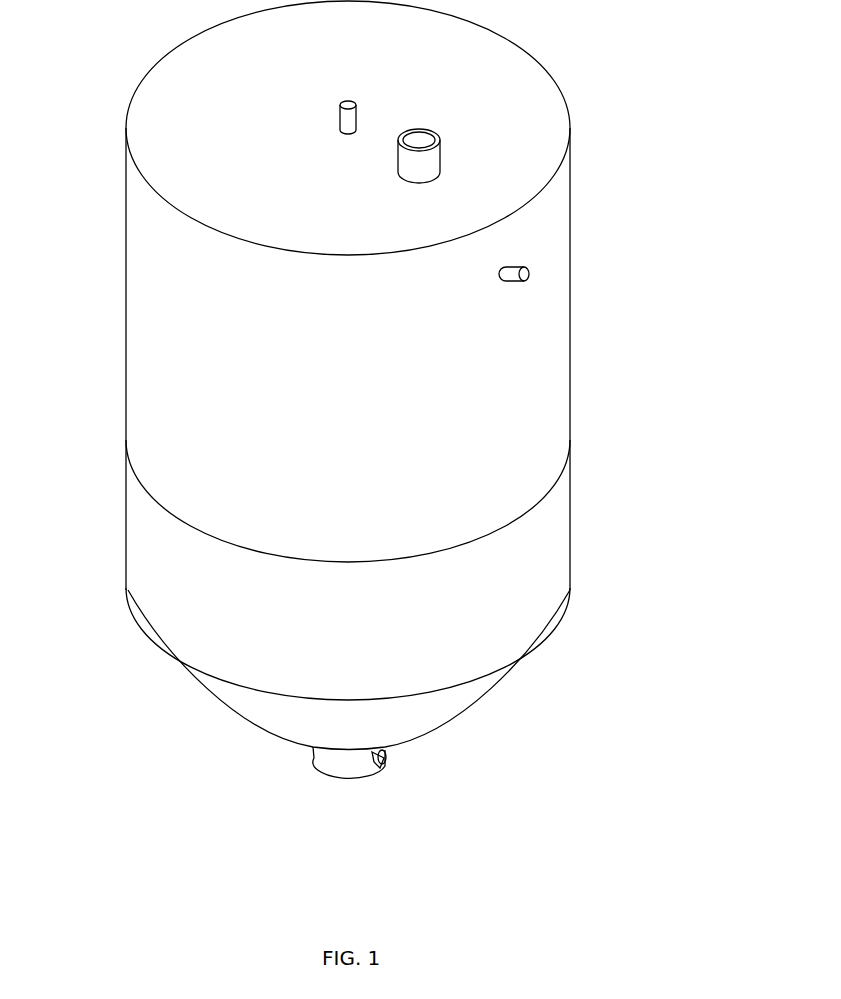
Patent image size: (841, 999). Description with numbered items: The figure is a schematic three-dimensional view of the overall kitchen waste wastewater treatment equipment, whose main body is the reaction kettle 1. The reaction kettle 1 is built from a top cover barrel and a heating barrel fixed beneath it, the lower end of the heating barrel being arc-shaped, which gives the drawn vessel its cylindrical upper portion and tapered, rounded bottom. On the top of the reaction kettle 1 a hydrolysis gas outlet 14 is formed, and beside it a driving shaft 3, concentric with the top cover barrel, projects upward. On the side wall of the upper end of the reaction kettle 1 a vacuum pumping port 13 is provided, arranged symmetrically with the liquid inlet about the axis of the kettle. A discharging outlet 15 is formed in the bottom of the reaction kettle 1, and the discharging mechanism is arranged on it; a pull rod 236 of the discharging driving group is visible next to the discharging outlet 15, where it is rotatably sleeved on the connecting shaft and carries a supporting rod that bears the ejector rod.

The reaction kettle 1 is at (177, 417).
The driving shaft 3 is at (348, 117).
The hydrolysis gas outlet 14 is at (430, 158).
The vacuum pumping port 13 is at (527, 275).
The discharging outlet 15 is at (340, 763).
The pull rod 236 is at (385, 762).